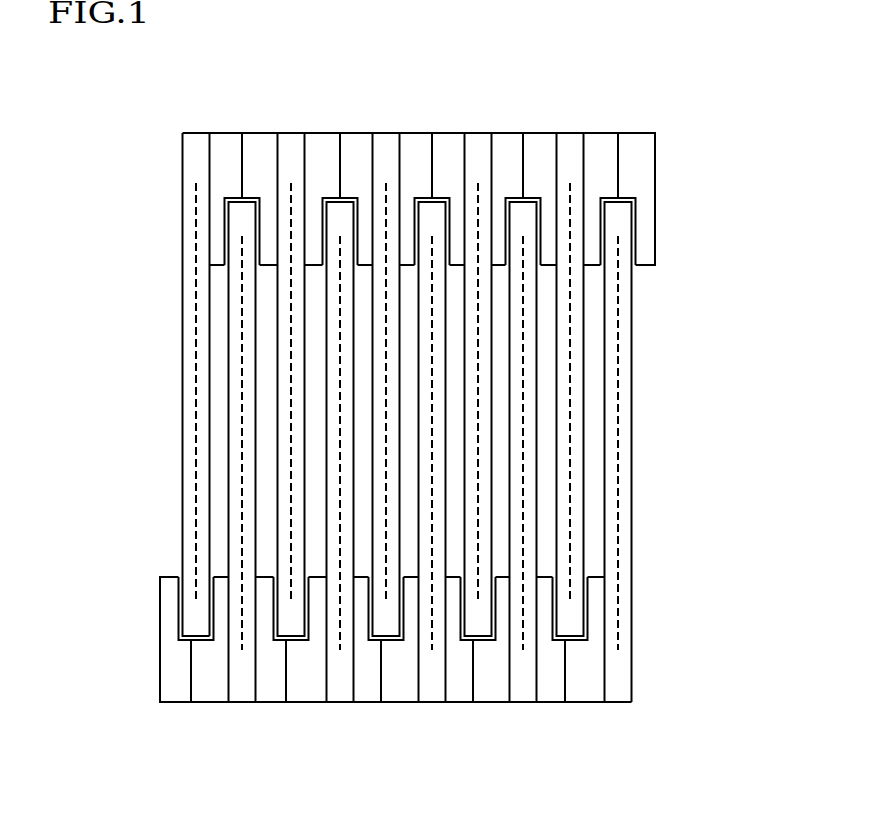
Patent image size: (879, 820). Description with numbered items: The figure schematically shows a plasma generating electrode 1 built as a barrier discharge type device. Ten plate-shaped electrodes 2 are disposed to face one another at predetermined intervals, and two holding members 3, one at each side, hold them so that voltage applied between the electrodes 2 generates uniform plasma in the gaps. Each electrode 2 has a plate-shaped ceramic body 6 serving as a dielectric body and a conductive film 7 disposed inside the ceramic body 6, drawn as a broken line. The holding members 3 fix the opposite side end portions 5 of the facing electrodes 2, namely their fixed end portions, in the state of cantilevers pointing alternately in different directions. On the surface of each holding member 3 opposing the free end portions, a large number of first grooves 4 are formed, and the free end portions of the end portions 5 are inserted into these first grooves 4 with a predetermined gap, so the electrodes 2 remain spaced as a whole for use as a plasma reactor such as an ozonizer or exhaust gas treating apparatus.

The plasma generating electrode 1 is at (343, 66).
The electrodes 2 is at (567, 430).
The holding members 3 is at (510, 168).
The first grooves 4 is at (563, 645).
The end portions 5 is at (567, 177).
The ceramic body 6 is at (204, 421).
The conductive film 7 is at (193, 542).